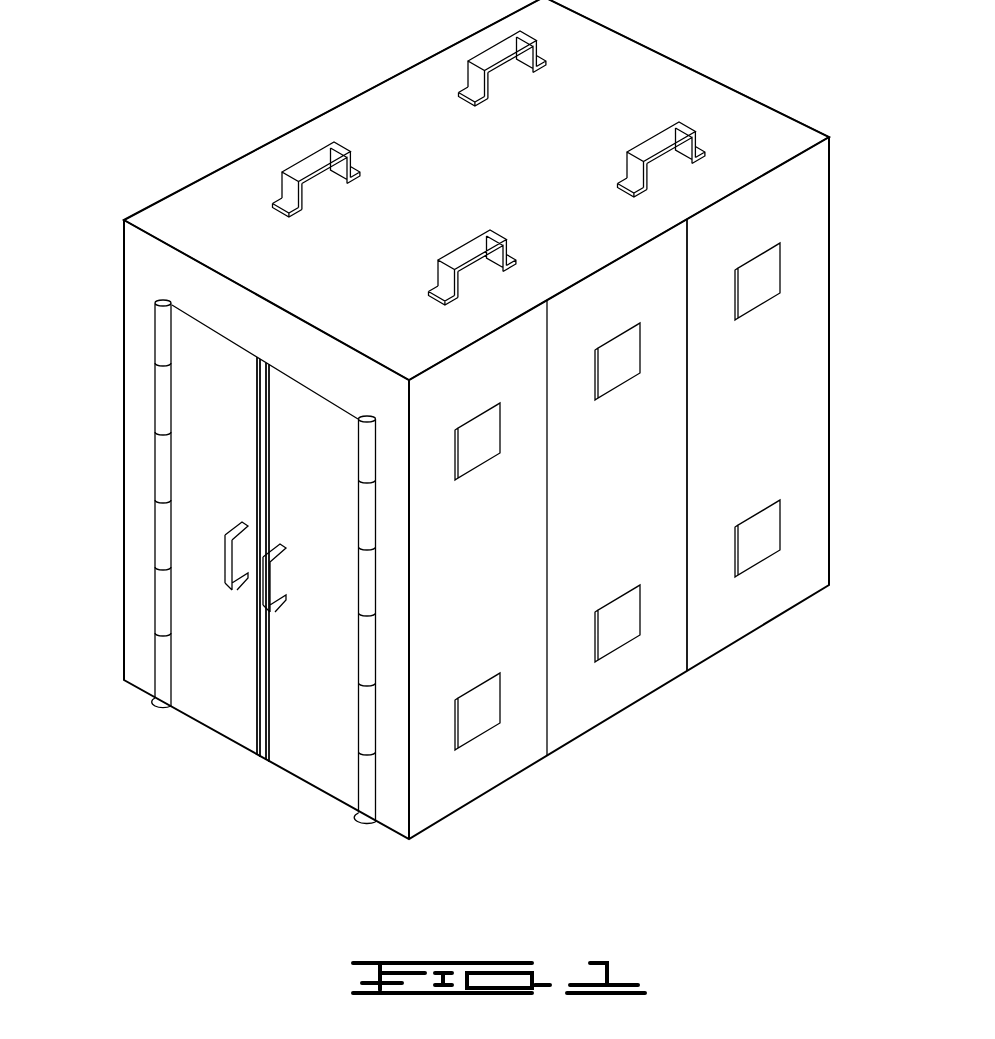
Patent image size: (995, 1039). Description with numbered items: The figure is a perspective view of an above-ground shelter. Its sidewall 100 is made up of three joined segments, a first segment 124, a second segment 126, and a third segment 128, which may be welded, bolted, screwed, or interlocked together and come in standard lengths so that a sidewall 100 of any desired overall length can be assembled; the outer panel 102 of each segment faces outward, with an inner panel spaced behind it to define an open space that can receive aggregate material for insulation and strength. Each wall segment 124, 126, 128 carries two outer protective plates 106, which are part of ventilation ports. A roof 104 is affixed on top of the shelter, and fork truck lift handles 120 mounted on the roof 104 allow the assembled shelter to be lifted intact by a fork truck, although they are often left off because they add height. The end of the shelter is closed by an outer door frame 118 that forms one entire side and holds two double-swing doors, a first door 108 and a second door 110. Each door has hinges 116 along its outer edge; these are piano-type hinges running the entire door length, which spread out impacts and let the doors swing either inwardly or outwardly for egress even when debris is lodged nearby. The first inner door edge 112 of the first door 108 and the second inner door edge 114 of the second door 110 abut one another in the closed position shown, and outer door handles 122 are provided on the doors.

The sidewall 100 is at (636, 484).
The outer panel 102 is at (810, 424).
The roof 104 is at (490, 182).
The outer protective plate 106 is at (770, 275).
The first door 108 is at (234, 486).
The second door 110 is at (337, 509).
The first inner door edge 112 is at (260, 725).
The second inner door edge 114 is at (267, 753).
The hinges 116 is at (155, 357).
The outer door frame 118 is at (138, 465).
The fork truck lift handles 120 is at (313, 155).
The outer door handles 122 is at (223, 563).
The first segment 124 is at (468, 783).
The second segment 126 is at (667, 662).
The third segment 128 is at (785, 597).